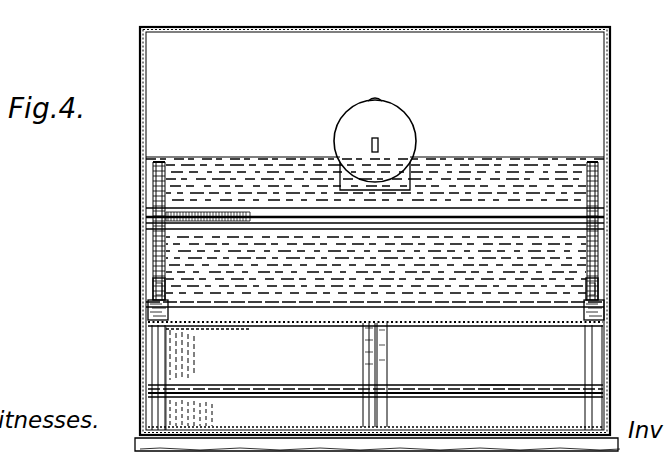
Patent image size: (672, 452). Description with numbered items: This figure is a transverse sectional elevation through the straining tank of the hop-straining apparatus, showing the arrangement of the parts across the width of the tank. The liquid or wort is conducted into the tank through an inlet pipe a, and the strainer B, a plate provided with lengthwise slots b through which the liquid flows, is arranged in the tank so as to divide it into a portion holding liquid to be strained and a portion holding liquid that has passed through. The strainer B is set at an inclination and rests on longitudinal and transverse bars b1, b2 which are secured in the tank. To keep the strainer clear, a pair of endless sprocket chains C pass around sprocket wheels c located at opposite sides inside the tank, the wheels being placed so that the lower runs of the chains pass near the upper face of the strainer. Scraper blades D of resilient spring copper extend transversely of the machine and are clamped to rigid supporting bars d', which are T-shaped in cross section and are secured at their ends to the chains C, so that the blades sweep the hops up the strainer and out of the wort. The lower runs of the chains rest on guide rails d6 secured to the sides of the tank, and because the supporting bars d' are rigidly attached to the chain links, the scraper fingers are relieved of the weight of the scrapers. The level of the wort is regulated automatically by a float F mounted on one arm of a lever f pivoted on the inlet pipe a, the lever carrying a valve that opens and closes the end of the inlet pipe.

The endless sprocket chain C is at (162, 163).
The scraper blade D is at (252, 210).
The lever f is at (364, 152).
The float F is at (375, 140).
The inlet pipe a is at (405, 183).
The supporting bar d' is at (375, 276).
The sprocket wheel c is at (153, 286).
The guide rail d6 is at (628, 307).
The longitudinal bar b1 is at (152, 351).
The strainer B is at (235, 344).
The slot b is at (196, 379).
The transverse bar b2 is at (478, 385).